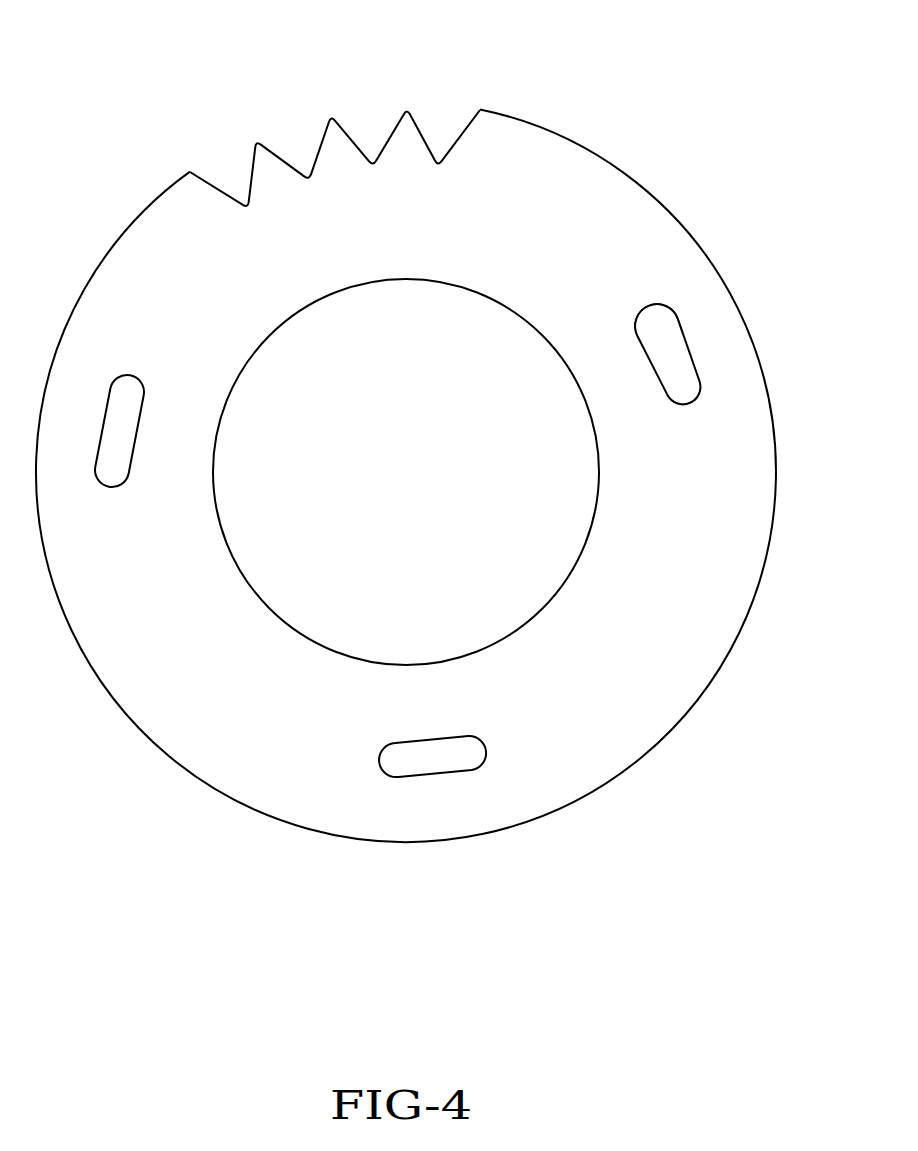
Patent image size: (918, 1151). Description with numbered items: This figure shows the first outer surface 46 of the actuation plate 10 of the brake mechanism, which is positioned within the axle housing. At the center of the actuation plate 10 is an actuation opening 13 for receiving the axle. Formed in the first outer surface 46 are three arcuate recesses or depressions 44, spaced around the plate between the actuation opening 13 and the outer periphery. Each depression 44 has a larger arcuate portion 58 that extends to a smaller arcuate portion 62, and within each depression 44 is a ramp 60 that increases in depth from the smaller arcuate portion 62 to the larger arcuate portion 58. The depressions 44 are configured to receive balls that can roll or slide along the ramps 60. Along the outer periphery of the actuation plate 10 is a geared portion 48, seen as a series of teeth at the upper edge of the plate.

The actuation plate 10 is at (628, 115).
The actuation opening 13 is at (435, 480).
The arcuate recesses or depressions 44 is at (677, 355).
The first outer surface 46 is at (590, 738).
The geared portion 48 is at (322, 127).
The larger arcuate portion 58 is at (653, 317).
The ramp 60 is at (667, 327).
The smaller arcuate portion 62 is at (682, 390).